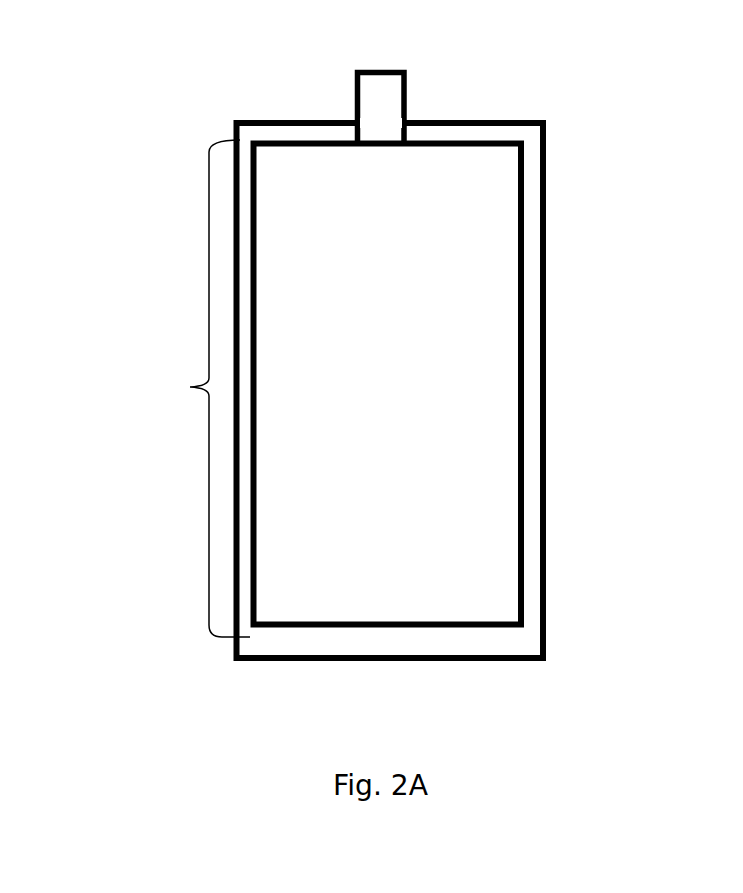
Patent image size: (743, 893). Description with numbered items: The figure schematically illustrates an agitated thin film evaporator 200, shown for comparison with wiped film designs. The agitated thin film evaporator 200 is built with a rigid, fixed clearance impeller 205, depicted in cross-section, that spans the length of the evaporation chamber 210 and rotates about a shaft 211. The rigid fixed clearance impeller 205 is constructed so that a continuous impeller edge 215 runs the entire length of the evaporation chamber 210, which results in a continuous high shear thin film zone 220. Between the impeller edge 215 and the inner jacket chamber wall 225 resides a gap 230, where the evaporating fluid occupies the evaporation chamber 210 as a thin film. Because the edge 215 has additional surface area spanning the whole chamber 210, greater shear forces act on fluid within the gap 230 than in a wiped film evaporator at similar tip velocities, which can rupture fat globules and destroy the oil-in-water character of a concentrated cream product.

The agitated thin film evaporator 200 is at (556, 77).
The rigid fixed clearance impeller 205 is at (343, 592).
The evaporation chamber 210 is at (513, 643).
The shaft 211 is at (355, 102).
The continuous impeller edge 215 is at (520, 543).
The continuous high shear thin film zone 220 is at (190, 387).
The inner jacket chamber wall 225 is at (545, 358).
The gap 230 is at (531, 274).